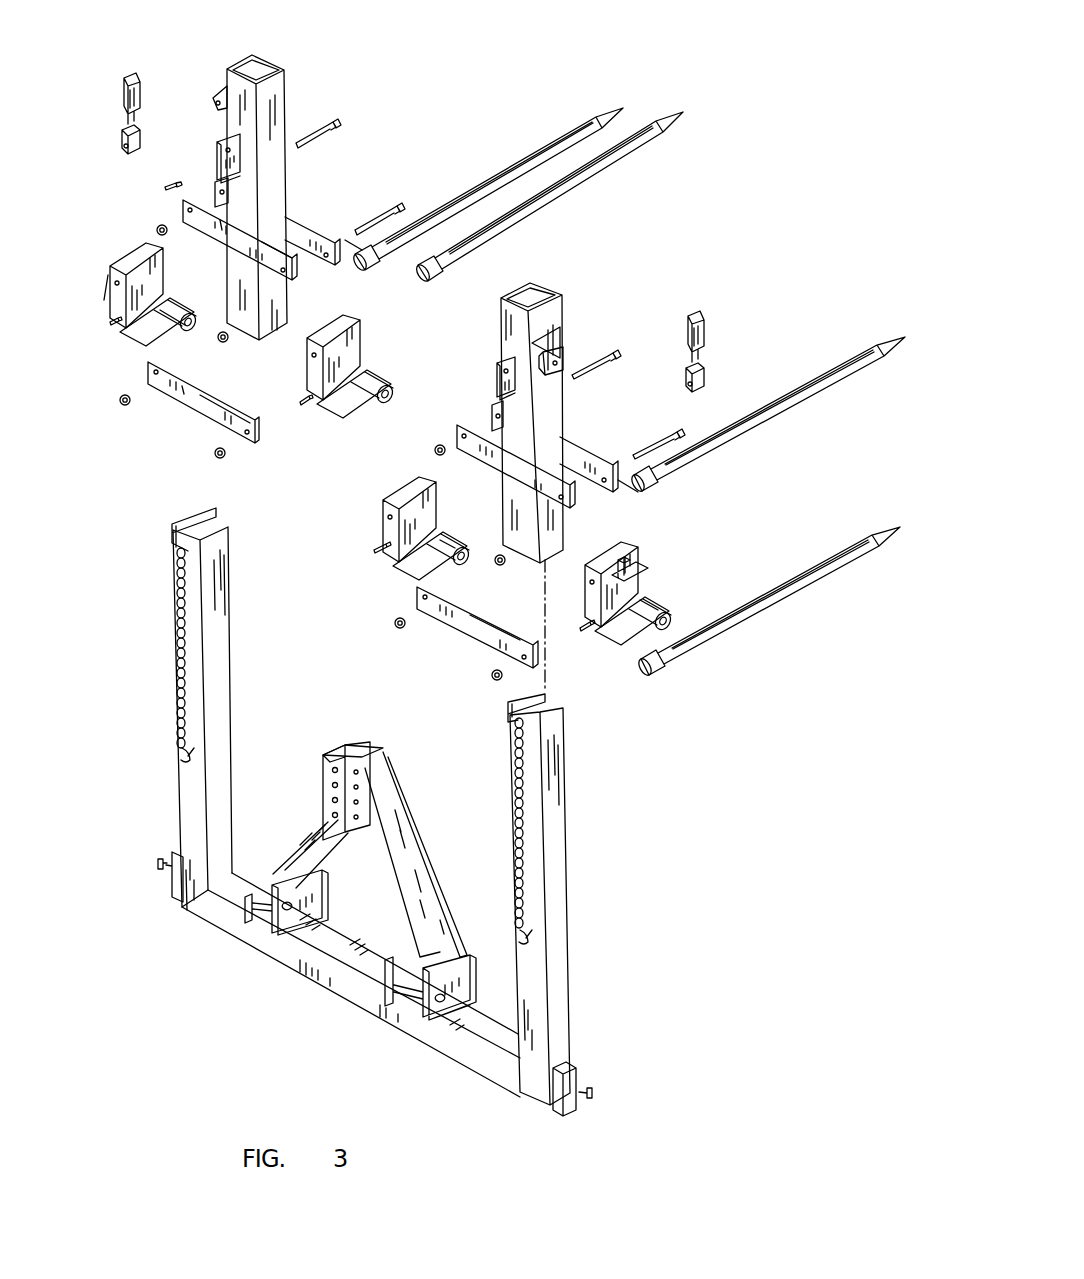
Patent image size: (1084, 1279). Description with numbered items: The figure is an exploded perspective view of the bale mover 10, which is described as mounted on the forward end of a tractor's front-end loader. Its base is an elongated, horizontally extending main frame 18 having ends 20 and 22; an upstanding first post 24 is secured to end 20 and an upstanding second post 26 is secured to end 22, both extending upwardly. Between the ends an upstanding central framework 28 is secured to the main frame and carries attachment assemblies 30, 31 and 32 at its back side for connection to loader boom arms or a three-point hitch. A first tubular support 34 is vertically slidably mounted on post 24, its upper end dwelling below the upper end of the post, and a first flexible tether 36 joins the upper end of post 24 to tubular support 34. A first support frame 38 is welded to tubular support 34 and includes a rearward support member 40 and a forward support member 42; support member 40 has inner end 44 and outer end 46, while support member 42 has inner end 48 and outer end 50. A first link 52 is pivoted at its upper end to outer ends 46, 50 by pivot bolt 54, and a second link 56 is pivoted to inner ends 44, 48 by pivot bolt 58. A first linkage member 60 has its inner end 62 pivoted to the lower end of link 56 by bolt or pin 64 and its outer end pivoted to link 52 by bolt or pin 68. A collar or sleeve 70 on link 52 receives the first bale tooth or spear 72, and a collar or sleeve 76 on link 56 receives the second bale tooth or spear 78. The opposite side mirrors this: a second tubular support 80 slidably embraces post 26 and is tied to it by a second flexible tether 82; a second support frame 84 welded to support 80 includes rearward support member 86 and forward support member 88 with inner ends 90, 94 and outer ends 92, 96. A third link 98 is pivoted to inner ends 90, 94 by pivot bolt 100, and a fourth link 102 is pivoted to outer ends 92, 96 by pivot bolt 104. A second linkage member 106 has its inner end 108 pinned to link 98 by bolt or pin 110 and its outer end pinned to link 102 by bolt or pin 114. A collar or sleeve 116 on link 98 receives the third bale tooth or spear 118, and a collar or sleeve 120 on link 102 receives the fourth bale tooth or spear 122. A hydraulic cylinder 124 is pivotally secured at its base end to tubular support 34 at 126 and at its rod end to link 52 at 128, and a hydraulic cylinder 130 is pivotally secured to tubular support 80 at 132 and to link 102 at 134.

The bale mover 10 is at (150, 518).
The main frame 18 is at (340, 990).
The end of main frame 20 is at (583, 1123).
The end of main frame 22 is at (162, 880).
The first post 24 is at (552, 948).
The second post 26 is at (192, 787).
The central framework 28 is at (430, 800).
The attachment assembly 30 is at (475, 970).
The attachment assembly 31 is at (262, 895).
The attachment assembly 32 is at (352, 745).
The first tubular support 34 is at (553, 310).
The first flexible tether 36 is at (527, 845).
The first support frame 38 is at (583, 422).
The support member 40 is at (425, 510).
The support member 42 is at (600, 455).
The inner end of support member 44 is at (490, 425).
The outer end of support member 46 is at (573, 485).
The inner end of support member 48 is at (497, 398).
The outer end of support member 50 is at (620, 490).
The first link 52 is at (690, 562).
The pivot bolt 54 is at (685, 430).
The second link 56 is at (362, 514).
The pivot bolt 58 is at (620, 352).
The first linkage member 60 is at (465, 635).
The inner end of linkage member 62 is at (415, 595).
The bolt or pin 64 is at (372, 548).
The bolt or pin 68 is at (585, 632).
The collar or sleeve 70 is at (650, 598).
The first bale tooth or spear 72 is at (800, 577).
The collar or sleeve 76 is at (450, 548).
The second bale tooth or spear 78 is at (810, 395).
The second tubular support 80 is at (300, 97).
The second flexible tether 82 is at (178, 640).
The second support frame 84 is at (162, 186).
The support member 86 is at (232, 238).
The support member 88 is at (318, 228).
The inner end of support member 90 is at (298, 268).
The outer end of support member 92 is at (215, 188).
The inner end of support member 94 is at (352, 262).
The outer end of support member 96 is at (218, 150).
The third link 98 is at (290, 370).
The pivot bolt 100 is at (400, 200).
The fourth link 102 is at (110, 326).
The pivot bolt 104 is at (340, 118).
The second linkage member 106 is at (203, 410).
The inner end of linkage member 108 is at (252, 440).
The bolt or pin 110 is at (305, 400).
The bolt or pin 114 is at (104, 310).
The collar or sleeve 116 is at (390, 375).
The third bale tooth or spear 118 is at (517, 223).
The collar or sleeve 120 is at (182, 325).
The fourth bale tooth or spear 122 is at (515, 160).
The hydraulic cylinder 124 is at (728, 340).
The pivot connection 126 is at (565, 352).
The pivot connection 128 is at (635, 555).
The hydraulic cylinder 130 is at (150, 96).
The pivot connection 132 is at (217, 93).
The pivot connection 134 is at (110, 262).